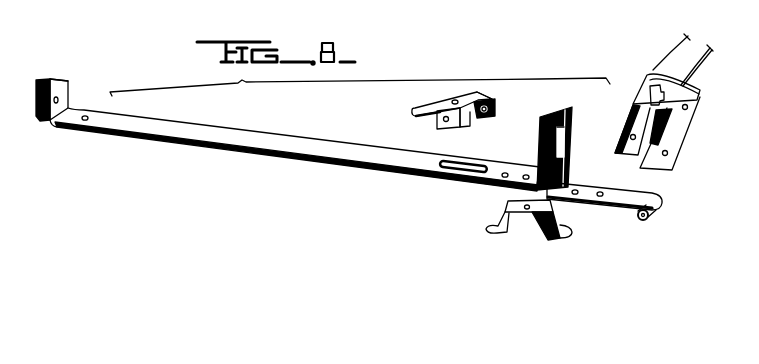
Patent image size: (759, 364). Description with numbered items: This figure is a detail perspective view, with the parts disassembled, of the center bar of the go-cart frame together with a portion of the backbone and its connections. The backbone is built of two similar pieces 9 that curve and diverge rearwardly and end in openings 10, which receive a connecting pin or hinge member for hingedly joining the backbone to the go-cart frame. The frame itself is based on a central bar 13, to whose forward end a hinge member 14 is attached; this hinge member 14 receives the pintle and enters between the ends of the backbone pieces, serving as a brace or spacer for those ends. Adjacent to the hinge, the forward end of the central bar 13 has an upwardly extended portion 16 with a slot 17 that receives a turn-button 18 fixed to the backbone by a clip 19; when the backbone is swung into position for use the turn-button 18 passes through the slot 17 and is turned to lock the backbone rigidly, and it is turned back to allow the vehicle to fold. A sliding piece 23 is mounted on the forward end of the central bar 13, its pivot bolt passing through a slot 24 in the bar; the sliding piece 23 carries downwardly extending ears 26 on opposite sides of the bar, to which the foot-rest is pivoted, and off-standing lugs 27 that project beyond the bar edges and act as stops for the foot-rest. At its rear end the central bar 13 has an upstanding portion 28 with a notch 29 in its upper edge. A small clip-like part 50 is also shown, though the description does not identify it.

The backbone piece 9 is at (687, 140).
The opening 10 is at (621, 124).
The central bar 13 is at (192, 129).
The hinge member 14 is at (622, 205).
The upwardly extended portion 16 is at (561, 163).
The slot 17 is at (566, 124).
The turn-button 18 is at (644, 85).
The clip 19 is at (683, 115).
The sliding piece 23 is at (462, 109).
The slot 24 is at (461, 174).
The ears 26 is at (442, 124).
The lugs 27 is at (486, 100).
The upstanding portion 28 is at (70, 84).
The notch 29 is at (50, 78).
The U-clip 50 is at (490, 230).